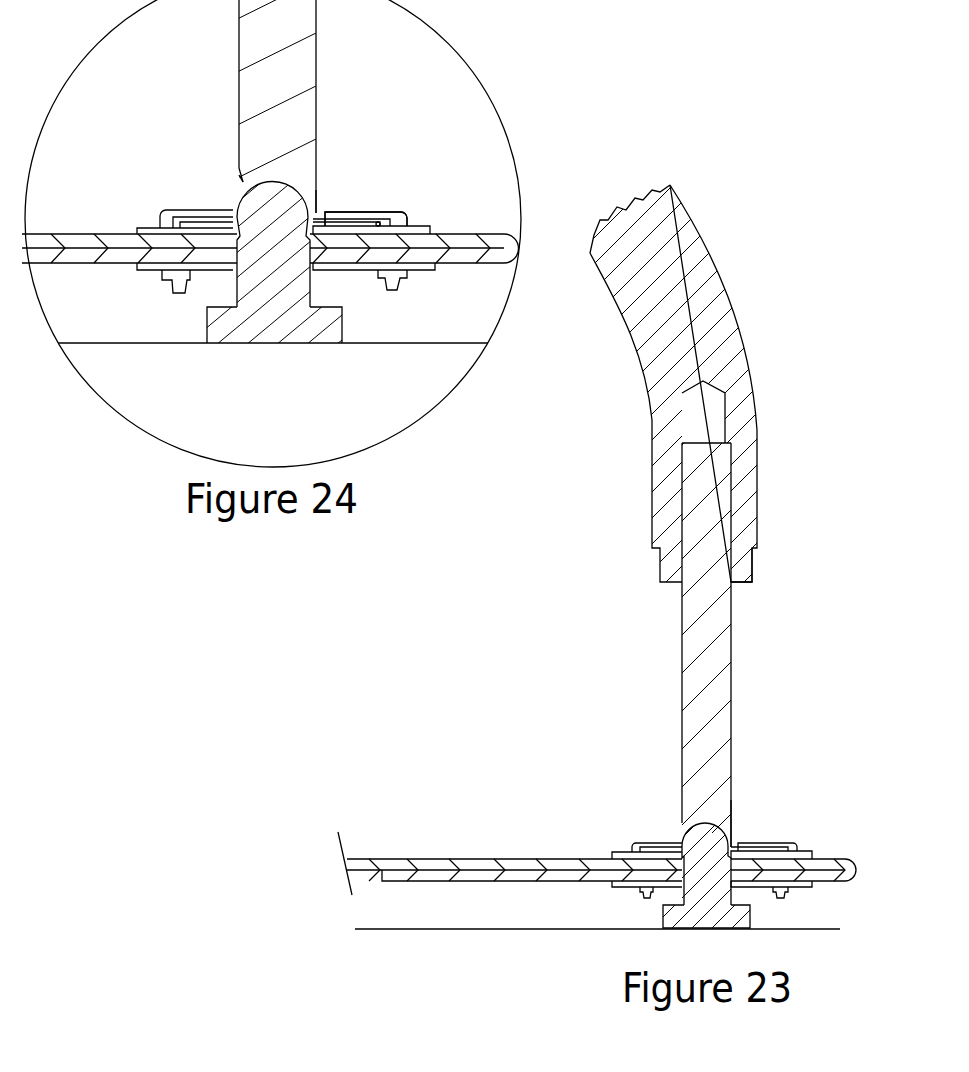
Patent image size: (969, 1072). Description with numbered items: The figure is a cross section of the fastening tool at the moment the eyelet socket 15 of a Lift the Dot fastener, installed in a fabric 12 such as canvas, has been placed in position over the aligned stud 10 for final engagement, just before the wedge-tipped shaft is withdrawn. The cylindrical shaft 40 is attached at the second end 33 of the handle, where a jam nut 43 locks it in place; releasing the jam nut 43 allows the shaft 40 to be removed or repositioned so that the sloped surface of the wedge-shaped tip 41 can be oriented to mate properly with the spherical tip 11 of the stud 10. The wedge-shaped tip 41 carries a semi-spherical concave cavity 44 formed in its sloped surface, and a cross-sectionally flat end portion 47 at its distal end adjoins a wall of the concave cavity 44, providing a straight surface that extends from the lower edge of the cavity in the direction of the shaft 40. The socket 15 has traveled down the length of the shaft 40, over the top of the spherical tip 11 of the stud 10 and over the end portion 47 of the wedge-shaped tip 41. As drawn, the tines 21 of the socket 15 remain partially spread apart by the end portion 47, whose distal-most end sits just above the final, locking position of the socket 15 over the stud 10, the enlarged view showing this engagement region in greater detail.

In FIG. 24, the stud 10 is at (346, 320).
In FIG. 23, the stud 10 is at (753, 906).
In FIG. 24, the spherical tip 11 is at (242, 194).
In FIG. 23, the spherical tip 11 is at (682, 827).
In FIG. 24, the fabric 12 is at (130, 231).
In FIG. 23, the fabric 12 is at (435, 857).
In FIG. 24, the eyelet socket 15 is at (399, 210).
In FIG. 23, the eyelet socket 15 is at (790, 840).
In FIG. 24, the tines 21 is at (234, 217).
In FIG. 23, the second end 33 is at (651, 528).
In FIG. 24, the cylindrical shaft 40 is at (317, 53).
In FIG. 23, the cylindrical shaft 40 is at (732, 740).
In FIG. 23, the wedge-shaped tip 41 is at (732, 818).
In FIG. 23, the jam nut 43 is at (753, 571).
In FIG. 24, the semi-spherical concave cavity 44 is at (289, 181).
In FIG. 24, the end portion 47 is at (319, 203).